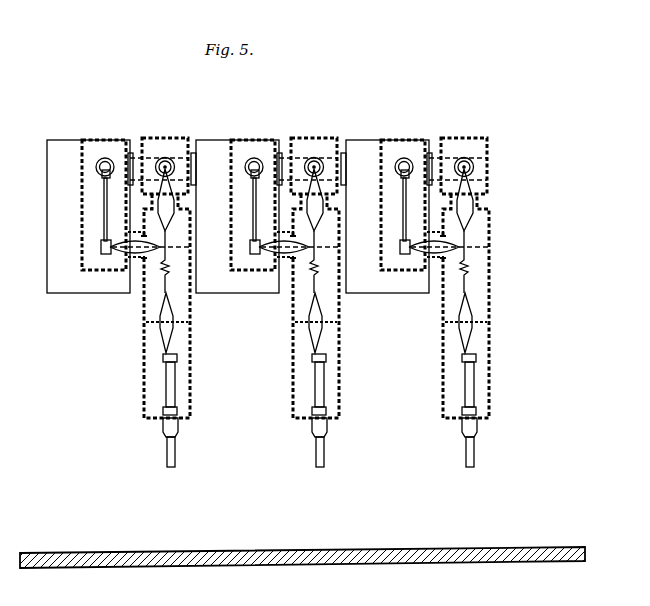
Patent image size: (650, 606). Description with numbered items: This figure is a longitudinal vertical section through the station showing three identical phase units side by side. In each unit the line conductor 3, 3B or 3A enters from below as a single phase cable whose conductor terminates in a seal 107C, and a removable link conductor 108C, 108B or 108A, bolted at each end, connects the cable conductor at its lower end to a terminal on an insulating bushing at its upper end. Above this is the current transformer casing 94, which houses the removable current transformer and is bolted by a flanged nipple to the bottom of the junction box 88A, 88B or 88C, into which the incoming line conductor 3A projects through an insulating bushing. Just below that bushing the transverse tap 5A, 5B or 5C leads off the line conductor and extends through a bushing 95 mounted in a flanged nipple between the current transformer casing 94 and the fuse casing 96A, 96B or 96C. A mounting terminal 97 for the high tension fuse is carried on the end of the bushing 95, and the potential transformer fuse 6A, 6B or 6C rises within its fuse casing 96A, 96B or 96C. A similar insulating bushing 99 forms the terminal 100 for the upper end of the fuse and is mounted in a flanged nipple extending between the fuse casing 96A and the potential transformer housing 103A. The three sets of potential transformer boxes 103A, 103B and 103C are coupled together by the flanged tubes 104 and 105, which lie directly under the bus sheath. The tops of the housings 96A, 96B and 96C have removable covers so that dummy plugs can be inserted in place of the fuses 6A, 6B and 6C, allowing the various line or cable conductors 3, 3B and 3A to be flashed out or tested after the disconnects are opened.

The potential transformer box 103C is at (59, 143).
The potential transformer box 103B is at (212, 138).
The potential transformer housing 103A is at (356, 137).
The fuse casing 96C is at (92, 139).
The fuse casing 96B is at (248, 138).
The fuse casing 96A is at (397, 138).
The junction box 88C is at (165, 138).
The junction box 88B is at (308, 137).
The junction box 88A is at (473, 137).
The flanged tube 105 is at (134, 157).
The flanged tube 104 is at (282, 157).
The terminal 100 is at (397, 158).
The insulating bushing 99 is at (406, 166).
The potential transformer fuse 6C is at (104, 200).
The potential transformer fuse 6B is at (252, 197).
The potential transformer fuse 6A is at (402, 197).
The transverse tap 5C is at (190, 247).
The transverse tap 5B is at (340, 247).
The transverse tap 5A is at (462, 244).
The mounting terminal 97 is at (405, 247).
The bushing 95 is at (432, 260).
The current transformer casing 94 is at (490, 290).
The link conductor 108C is at (165, 380).
The link conductor 108B is at (310, 380).
The link conductor 108A is at (466, 370).
The seal 107C is at (160, 432).
The line conductor 3 is at (150, 465).
The line conductor 3B is at (318, 455).
The incoming line conductor 3A is at (466, 447).